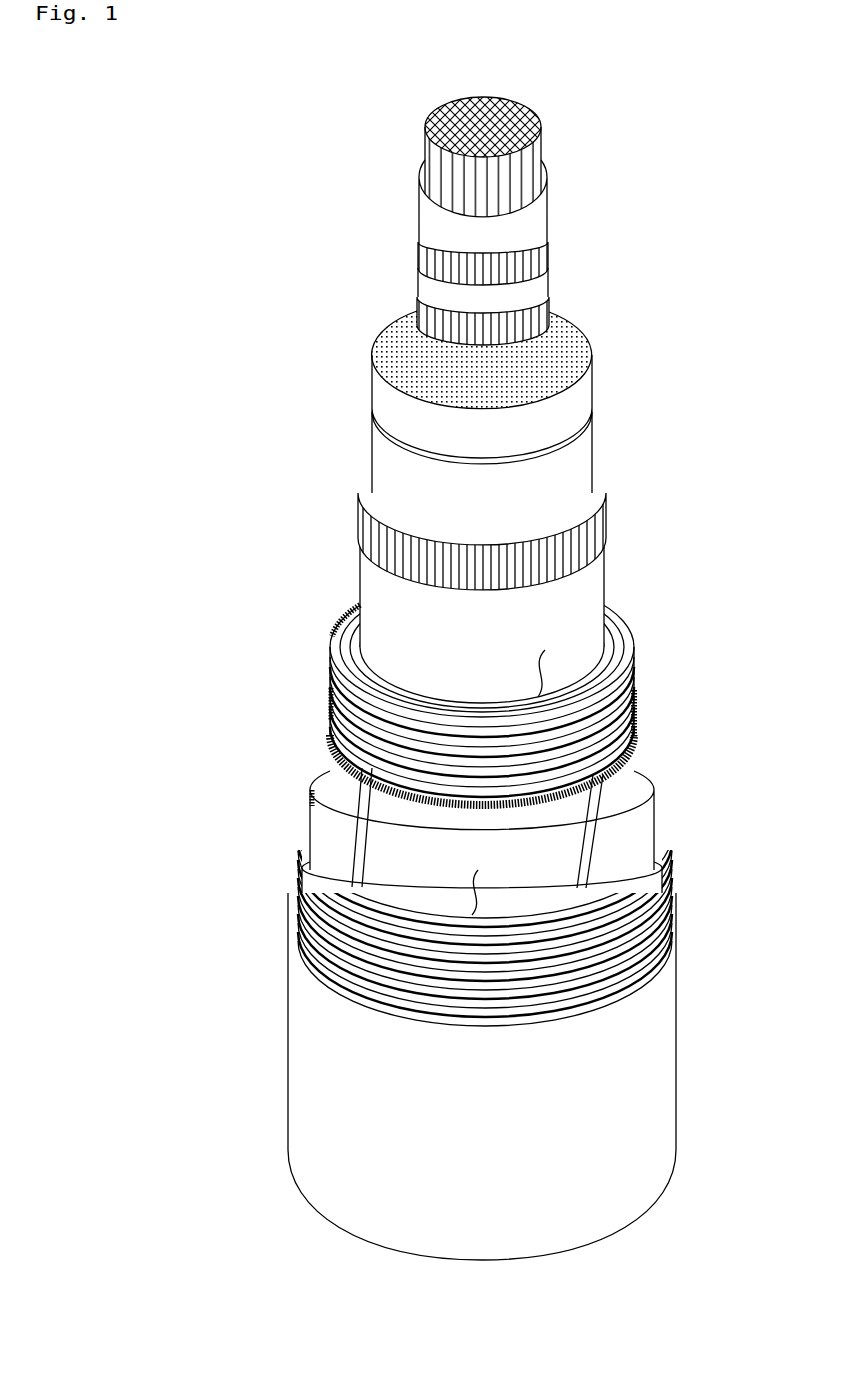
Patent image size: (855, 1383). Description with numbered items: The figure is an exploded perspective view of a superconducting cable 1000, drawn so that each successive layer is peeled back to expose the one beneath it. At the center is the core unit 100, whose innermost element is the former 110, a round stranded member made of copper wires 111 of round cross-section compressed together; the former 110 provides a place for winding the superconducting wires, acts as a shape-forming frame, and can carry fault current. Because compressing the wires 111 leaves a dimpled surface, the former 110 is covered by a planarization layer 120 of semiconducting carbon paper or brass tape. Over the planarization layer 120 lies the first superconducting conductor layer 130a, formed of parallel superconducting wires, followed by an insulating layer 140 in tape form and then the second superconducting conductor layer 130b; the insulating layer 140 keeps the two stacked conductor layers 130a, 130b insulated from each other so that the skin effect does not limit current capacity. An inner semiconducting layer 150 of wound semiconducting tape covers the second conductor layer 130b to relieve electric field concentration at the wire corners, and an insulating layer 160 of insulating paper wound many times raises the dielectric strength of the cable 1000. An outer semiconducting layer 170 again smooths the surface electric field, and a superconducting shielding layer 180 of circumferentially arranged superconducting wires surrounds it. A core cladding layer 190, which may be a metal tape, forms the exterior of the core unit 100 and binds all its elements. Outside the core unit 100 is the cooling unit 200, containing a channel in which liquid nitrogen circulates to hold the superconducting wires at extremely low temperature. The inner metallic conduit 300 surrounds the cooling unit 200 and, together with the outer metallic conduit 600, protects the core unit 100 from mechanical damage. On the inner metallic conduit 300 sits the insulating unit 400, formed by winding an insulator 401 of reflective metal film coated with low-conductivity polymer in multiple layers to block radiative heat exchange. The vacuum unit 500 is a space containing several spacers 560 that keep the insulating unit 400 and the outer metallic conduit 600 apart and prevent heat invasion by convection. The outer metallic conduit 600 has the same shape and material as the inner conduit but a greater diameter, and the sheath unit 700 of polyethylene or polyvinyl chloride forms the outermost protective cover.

The superconducting cable 1000 is at (372, 176).
The core unit 100 is at (728, 600).
The copper wires 111 is at (533, 113).
The former 110 is at (570, 157).
The planarization layer 120 is at (533, 207).
The first superconducting conductor layer 130a is at (553, 242).
The insulating layer 140 is at (553, 273).
The second superconducting conductor layer 130b is at (553, 301).
The inner semiconducting layer 150 is at (587, 335).
The insulating layer 160 is at (540, 401).
The outer semiconducting layer 170 is at (540, 473).
The superconducting shielding layer 180 is at (545, 555).
The core cladding layer 190 is at (545, 597).
The cooling unit 200 is at (540, 668).
The inner metallic conduit 300 is at (580, 720).
The insulating unit 400 is at (625, 800).
The insulator 401 is at (330, 698).
The spacers 560 is at (600, 840).
The vacuum unit 500 is at (560, 887).
The outer metallic conduit 600 is at (610, 912).
The sheath unit 700 is at (665, 1045).